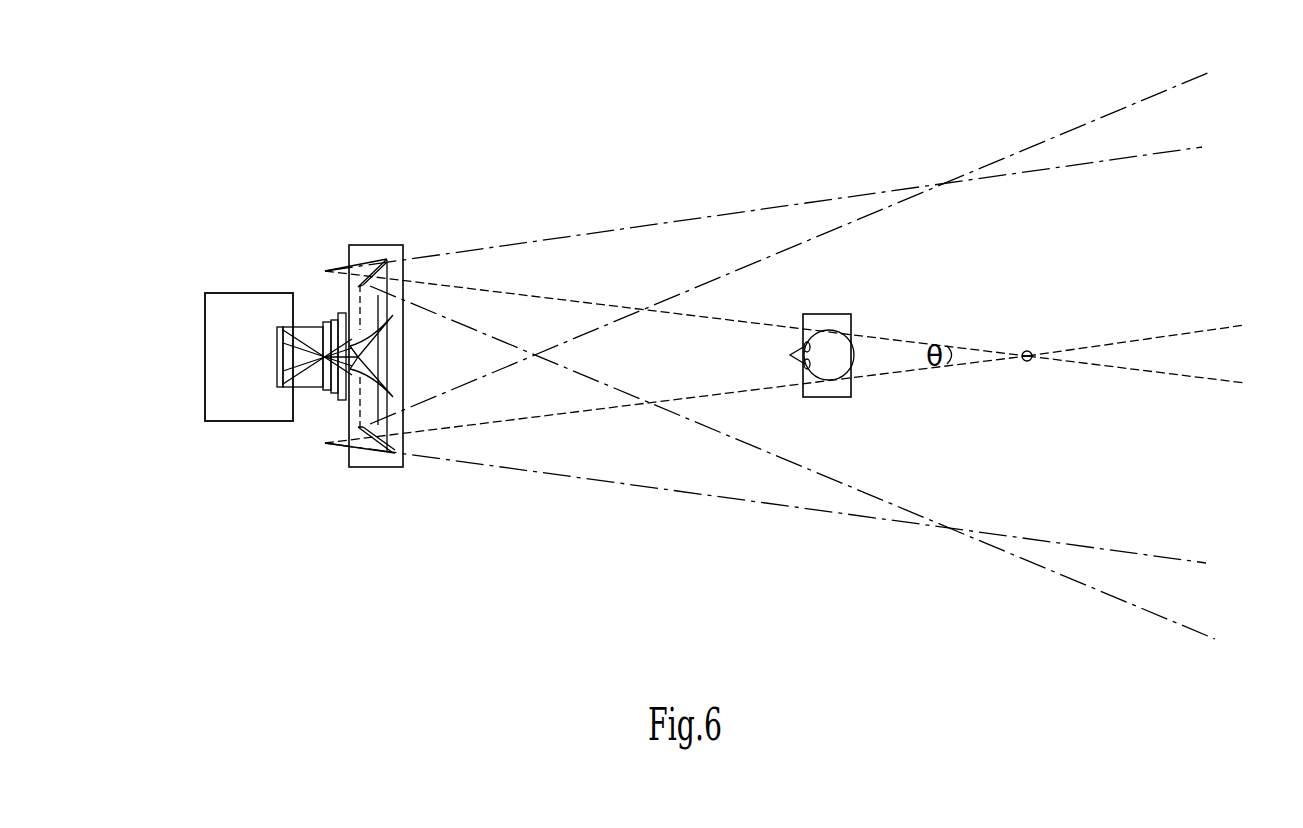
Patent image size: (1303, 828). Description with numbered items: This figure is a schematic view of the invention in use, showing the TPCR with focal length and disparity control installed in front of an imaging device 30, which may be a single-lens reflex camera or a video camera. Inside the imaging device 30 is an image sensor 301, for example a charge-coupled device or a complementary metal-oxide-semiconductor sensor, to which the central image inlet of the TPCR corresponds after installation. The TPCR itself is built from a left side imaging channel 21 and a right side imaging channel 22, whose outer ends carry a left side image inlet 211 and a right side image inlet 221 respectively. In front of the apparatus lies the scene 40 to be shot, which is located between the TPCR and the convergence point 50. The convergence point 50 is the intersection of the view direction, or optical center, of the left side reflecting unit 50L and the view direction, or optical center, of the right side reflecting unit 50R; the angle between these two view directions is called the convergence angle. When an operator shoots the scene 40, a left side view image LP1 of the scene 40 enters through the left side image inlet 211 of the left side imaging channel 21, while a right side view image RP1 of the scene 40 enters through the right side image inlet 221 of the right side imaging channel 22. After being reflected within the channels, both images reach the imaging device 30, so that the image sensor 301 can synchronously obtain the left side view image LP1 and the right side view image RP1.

The imaging device 30 is at (228, 295).
The image sensor 301 is at (277, 358).
The left side imaging channel 21 is at (362, 308).
The right side imaging channel 22 is at (367, 403).
The left side image inlet 211 is at (403, 270).
The right side image inlet 221 is at (403, 440).
The left side view image LP1 is at (787, 325).
The right side view image RP1 is at (745, 392).
The scene 40 is at (827, 355).
The convergence point 50 is at (1027, 350).
The view direction of the right side reflecting unit 50R is at (1143, 340).
The view direction of the left side reflecting unit 50L is at (1142, 372).